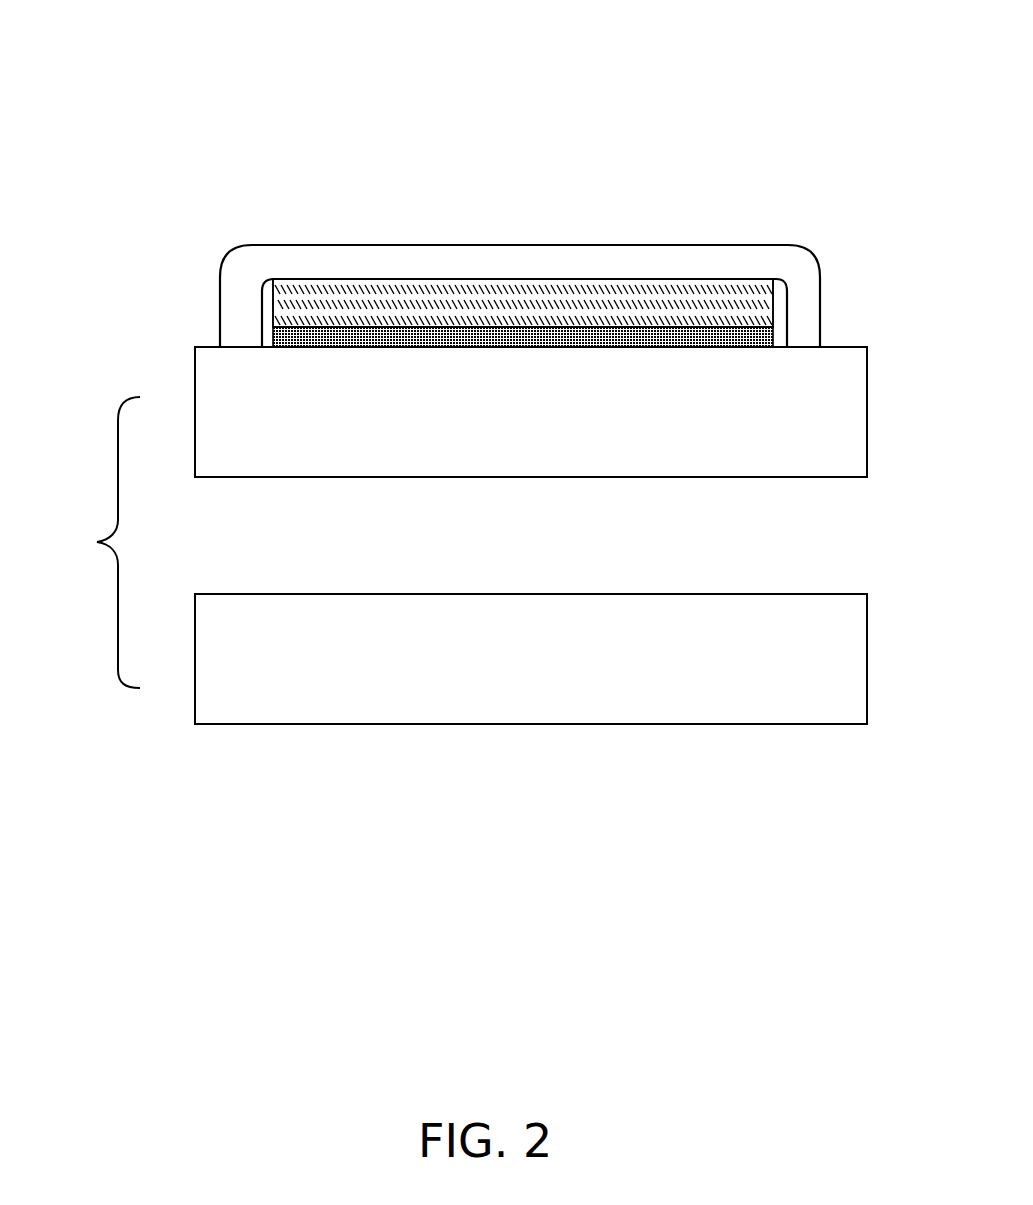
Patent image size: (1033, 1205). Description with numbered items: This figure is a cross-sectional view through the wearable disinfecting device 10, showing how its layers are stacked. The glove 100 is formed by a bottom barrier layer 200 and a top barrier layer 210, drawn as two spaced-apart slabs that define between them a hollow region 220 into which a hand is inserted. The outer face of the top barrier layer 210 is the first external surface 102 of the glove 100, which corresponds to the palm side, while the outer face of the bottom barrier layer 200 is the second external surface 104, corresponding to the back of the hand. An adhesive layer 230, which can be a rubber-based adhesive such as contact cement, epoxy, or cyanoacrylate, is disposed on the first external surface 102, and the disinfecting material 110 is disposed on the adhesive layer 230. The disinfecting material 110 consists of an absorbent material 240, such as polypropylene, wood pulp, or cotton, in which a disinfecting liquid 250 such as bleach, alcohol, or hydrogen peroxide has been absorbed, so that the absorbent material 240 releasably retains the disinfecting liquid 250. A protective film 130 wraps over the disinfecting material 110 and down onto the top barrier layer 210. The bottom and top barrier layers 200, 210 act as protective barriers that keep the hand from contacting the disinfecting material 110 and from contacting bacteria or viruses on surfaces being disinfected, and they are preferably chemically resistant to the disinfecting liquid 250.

The wearable disinfecting device 10 is at (210, 67).
The skin-protective glove 100 is at (86, 542).
The first external surface 102 is at (845, 347).
The second external surface 104 is at (652, 724).
The disinfecting material 110 is at (597, 305).
The protective film 130 is at (219, 287).
The bottom barrier layer 200 is at (548, 681).
The top barrier layer 210 is at (545, 427).
The hollow region 220 is at (842, 553).
The adhesive layer 230 is at (421, 347).
The absorbent material 240 is at (495, 305).
The disinfecting liquid 250 is at (422, 310).